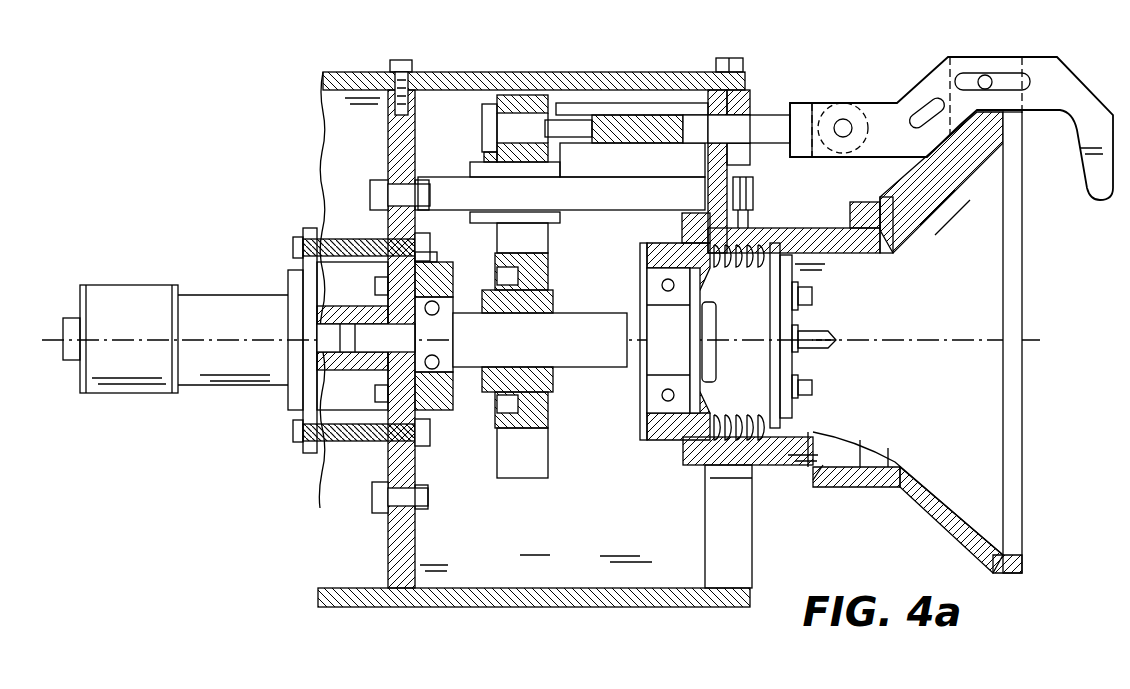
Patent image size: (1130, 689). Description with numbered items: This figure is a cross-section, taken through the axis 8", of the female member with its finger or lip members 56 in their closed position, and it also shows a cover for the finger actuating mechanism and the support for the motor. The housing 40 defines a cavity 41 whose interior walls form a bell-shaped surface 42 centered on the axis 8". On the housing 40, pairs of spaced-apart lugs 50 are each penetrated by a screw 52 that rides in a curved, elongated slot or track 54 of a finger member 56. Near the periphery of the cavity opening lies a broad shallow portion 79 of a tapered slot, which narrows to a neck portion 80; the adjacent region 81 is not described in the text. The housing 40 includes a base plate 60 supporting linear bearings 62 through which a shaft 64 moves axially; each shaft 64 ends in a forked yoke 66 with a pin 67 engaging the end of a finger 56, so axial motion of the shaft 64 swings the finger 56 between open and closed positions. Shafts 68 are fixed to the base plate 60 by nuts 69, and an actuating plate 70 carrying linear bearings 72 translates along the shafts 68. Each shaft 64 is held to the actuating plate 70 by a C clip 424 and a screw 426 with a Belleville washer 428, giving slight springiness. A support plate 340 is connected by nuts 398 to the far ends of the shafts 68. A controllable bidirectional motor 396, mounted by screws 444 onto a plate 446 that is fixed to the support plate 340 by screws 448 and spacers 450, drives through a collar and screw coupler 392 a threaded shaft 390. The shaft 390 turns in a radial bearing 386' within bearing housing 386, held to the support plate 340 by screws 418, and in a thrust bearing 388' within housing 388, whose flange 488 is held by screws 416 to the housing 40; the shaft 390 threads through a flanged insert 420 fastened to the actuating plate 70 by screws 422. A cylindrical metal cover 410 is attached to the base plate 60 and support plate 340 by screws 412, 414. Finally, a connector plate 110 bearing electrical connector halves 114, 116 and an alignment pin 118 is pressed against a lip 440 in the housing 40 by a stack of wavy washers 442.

The axis 8 is at (62, 318).
The housing 40 is at (880, 212).
The cavity 41 is at (1022, 300).
The surface 42 is at (1012, 250).
The lugs 50 is at (975, 125).
The shaft or screw 52 is at (985, 75).
The curved, elongated slot or track 54 is at (930, 108).
The finger or lip member 56 is at (1084, 95).
The base plate 60 is at (715, 530).
The linear bearing 62 is at (748, 100).
The shaft 64 is at (620, 115).
The forked yoke 66 is at (800, 103).
The pin 67 is at (846, 119).
The shafts 68 is at (680, 192).
The nuts 69 is at (753, 190).
The actuating plate 70 is at (530, 478).
The linear bearings 72 is at (566, 172).
The broad shallow portion 79 is at (922, 468).
The neck portion 80 is at (850, 448).
The flange web 81 is at (850, 470).
The connector plate 110 is at (772, 302).
The electrical connector half 114 is at (812, 298).
The electrical connector half 116 is at (812, 388).
The alignment pin 118 is at (834, 343).
The support plate 340 is at (415, 548).
The bearing housing 386 is at (444, 369).
The radial bearing 386' is at (478, 335).
The bearing housing 388 is at (661, 382).
The thrust bearing 388' is at (626, 422).
The threaded shaft 390 is at (600, 368).
The collar and screw 392 is at (347, 372).
The controllable bidirectional motor 396 is at (192, 292).
The nuts 398 is at (532, 290).
The cylindrical metal cover 410 is at (512, 607).
The screw 412 is at (730, 58).
The screw 414 is at (401, 60).
The screws 416 is at (690, 420).
The screws 418 is at (433, 272).
The threaded, flanged insert 420 is at (556, 302).
The screws 422 is at (528, 276).
The C clip 424 is at (575, 103).
The screw 426 is at (482, 128).
The Belleville washer 428 is at (484, 160).
The lip 440 is at (800, 465).
The stack of wavy washers 442 is at (760, 228).
The screws 444 is at (290, 430).
The plate 446 is at (303, 268).
The screws 448 is at (298, 237).
The spacers 450 is at (348, 222).
The flange 488 is at (682, 227).